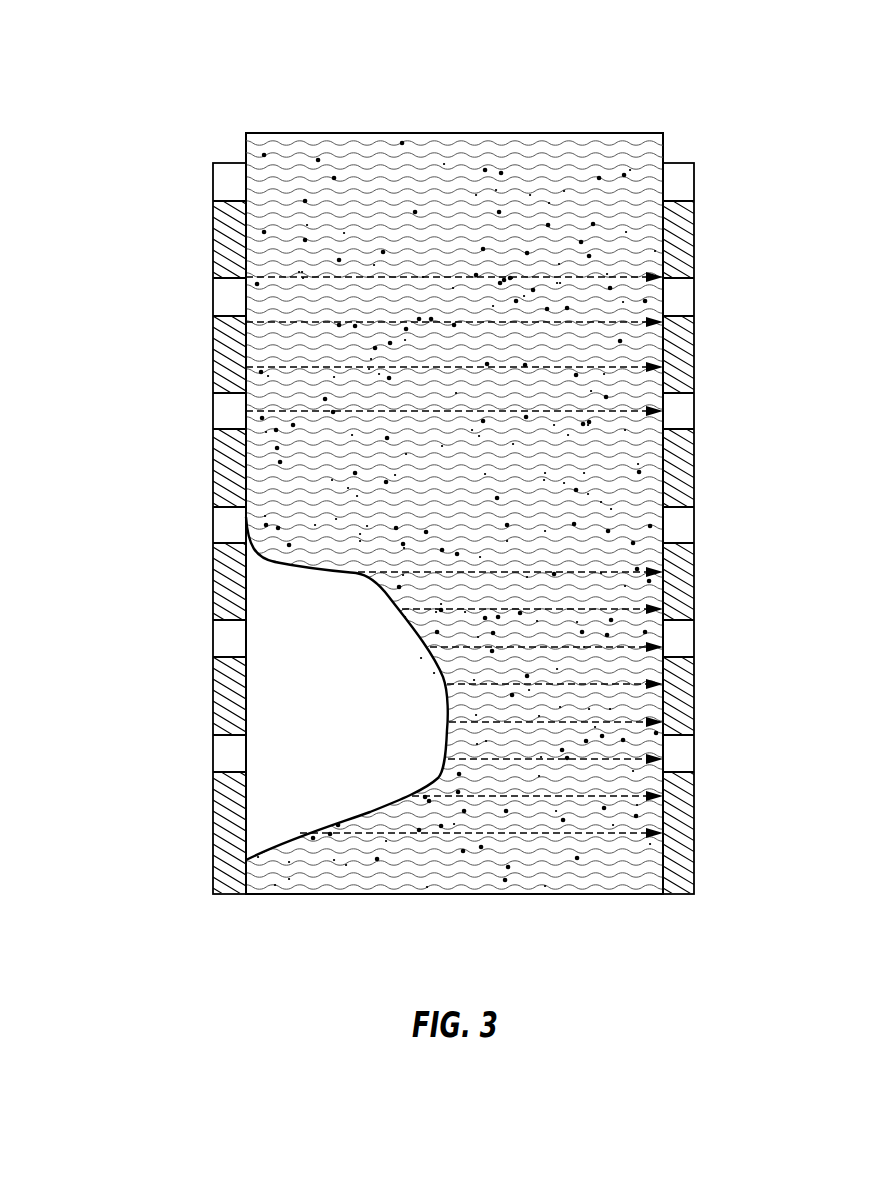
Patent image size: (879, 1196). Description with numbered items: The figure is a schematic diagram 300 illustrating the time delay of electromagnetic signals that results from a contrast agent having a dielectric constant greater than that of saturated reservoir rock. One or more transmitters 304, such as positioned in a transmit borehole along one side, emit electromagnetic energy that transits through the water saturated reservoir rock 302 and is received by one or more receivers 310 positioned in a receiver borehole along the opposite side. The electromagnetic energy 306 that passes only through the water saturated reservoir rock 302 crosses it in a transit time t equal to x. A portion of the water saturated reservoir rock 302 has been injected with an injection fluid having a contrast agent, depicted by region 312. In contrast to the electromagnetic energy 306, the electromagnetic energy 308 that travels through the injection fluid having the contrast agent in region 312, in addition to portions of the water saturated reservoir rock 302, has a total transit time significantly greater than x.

The schematic diagram 300 is at (157, 50).
The water saturated reservoir rock 302 is at (330, 147).
The transmitters 304 is at (213, 410).
The EM energy 306 is at (615, 409).
The EM energy 308 is at (615, 831).
The receivers 310 is at (694, 410).
The region of injection fluid having a contrast agent 312 is at (326, 812).